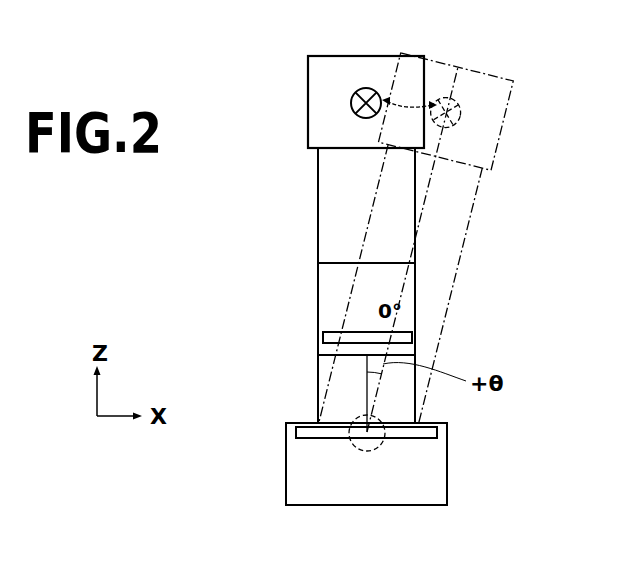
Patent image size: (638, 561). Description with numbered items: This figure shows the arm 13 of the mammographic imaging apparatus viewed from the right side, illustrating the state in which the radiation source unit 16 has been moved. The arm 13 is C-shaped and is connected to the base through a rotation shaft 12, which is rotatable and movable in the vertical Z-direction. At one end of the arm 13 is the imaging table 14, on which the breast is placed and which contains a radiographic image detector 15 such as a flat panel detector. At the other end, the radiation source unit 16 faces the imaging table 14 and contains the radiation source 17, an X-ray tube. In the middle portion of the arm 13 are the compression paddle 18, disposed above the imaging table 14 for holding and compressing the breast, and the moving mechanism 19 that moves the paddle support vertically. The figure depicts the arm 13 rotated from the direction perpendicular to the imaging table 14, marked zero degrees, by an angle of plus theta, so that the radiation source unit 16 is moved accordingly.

The rotation shaft 12 is at (350, 447).
The arm 13 is at (470, 227).
The imaging table 14 is at (447, 457).
The radiographic image detector 15 is at (437, 429).
The radiation source unit 16 is at (323, 56).
The radiation source 17 is at (368, 87).
The compression paddle 18 is at (413, 337).
The moving mechanism 19 is at (318, 284).